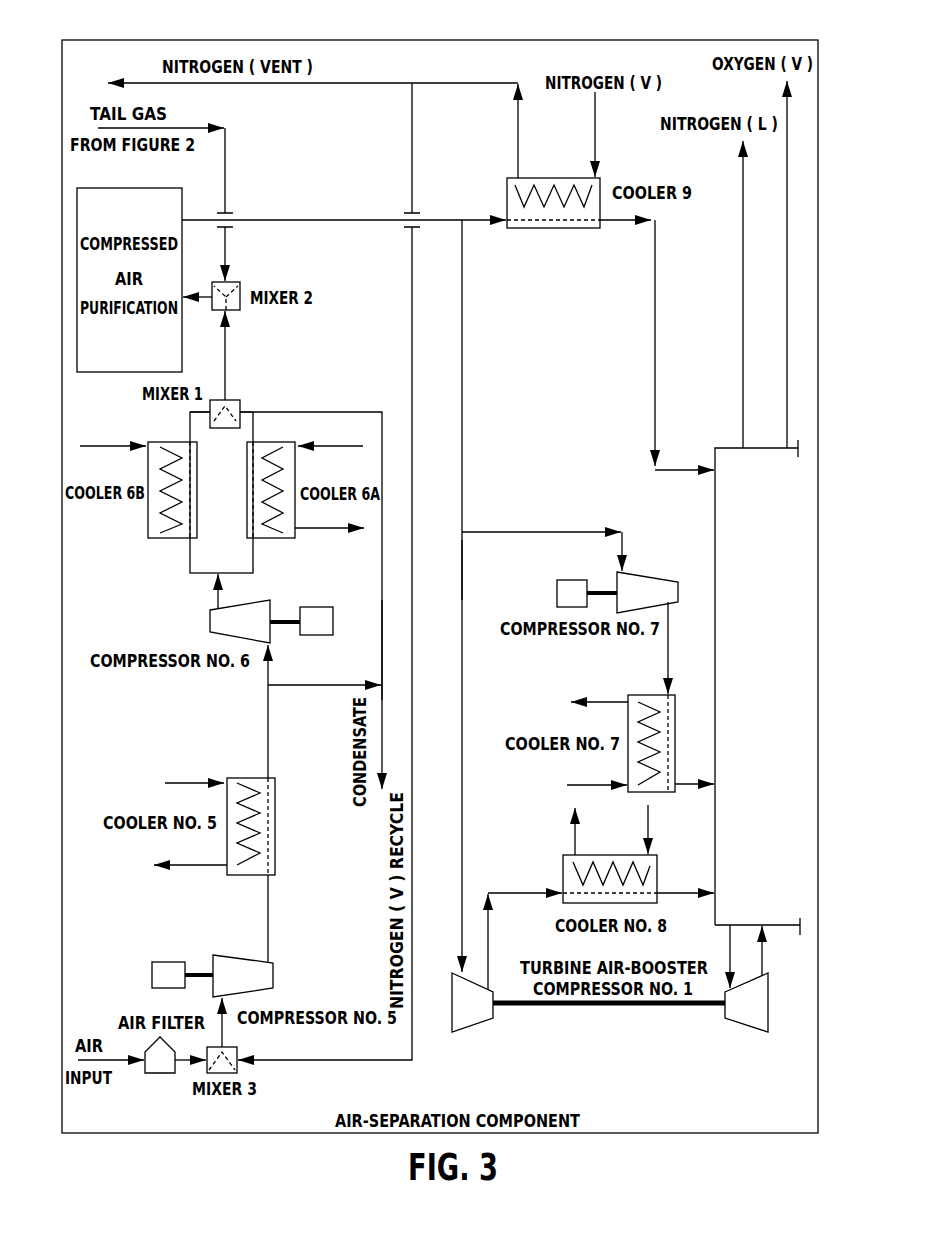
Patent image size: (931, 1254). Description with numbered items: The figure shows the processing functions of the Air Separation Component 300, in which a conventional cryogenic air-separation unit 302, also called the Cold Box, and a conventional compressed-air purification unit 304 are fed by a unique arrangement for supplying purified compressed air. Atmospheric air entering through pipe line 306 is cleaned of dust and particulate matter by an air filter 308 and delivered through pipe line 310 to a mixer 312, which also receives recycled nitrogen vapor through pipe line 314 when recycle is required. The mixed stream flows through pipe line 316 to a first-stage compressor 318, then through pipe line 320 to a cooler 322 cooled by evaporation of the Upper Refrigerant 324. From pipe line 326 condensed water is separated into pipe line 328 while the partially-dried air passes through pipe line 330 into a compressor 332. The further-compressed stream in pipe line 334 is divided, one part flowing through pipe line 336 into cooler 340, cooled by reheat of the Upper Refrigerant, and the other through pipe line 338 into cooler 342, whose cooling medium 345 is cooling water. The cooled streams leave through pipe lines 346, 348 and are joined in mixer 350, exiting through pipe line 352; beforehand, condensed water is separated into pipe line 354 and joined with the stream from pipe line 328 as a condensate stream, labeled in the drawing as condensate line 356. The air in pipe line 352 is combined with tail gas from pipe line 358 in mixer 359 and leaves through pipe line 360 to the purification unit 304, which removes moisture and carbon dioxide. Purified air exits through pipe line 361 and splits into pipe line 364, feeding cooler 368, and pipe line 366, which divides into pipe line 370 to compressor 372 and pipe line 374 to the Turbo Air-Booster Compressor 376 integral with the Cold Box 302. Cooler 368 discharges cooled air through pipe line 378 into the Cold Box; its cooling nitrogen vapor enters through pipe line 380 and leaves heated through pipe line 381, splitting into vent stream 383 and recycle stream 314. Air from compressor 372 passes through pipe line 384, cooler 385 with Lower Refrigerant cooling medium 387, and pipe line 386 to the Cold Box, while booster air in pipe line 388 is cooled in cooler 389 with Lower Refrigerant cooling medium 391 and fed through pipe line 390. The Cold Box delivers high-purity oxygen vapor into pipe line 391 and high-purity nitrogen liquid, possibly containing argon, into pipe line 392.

The Air Separation Component 300 is at (688, 53).
The cryogenic air-separation unit 302 is at (775, 474).
The compressed-air purification unit 304 is at (95, 352).
The pipe line 306 is at (128, 1065).
The air filter 308 is at (162, 1063).
The pipe line 310 is at (190, 1061).
The mixer 312 is at (240, 1068).
The pipe line 314 is at (412, 663).
The pipe line 316 is at (222, 1030).
The first-stage compressor 318 is at (265, 977).
The pipe line 320 is at (268, 905).
The cooler 322 is at (277, 822).
The Upper Refrigerant 324 is at (185, 783).
The pipe line 326 is at (270, 728).
The pipe line 328 is at (311, 685).
The pipe line 330 is at (268, 680).
The compressor 332 is at (271, 606).
The pipe line 334 is at (210, 592).
The pipe line 336 is at (190, 550).
The pipe line 338 is at (253, 565).
The cooler 340 is at (155, 468).
The cooler 342 is at (288, 470).
The cooling medium 345 is at (328, 446).
The pipe line 346 is at (190, 418).
The pipe line 348 is at (253, 430).
The mixer 350 is at (220, 399).
The pipe line 352 is at (226, 361).
The pipe line 354 is at (328, 412).
The condensate line 356 is at (382, 720).
The pipe line 358 is at (226, 160).
The mixer 359 is at (240, 284).
The pipe line 360 is at (208, 297).
The pipe line 361 is at (321, 219).
The pipe line 364 is at (470, 219).
The pipe line 366 is at (462, 400).
The cooler 368 is at (577, 218).
The pipe line 370 is at (505, 532).
The compressor 372 is at (652, 573).
The pipe line 374 is at (462, 557).
The Turbo Air-Booster Compressor 376 is at (478, 1031).
The pipe line 378 is at (655, 360).
The pipe line 380 is at (593, 150).
The pipe line 381 is at (518, 139).
The pipe line 383 is at (369, 84).
The pipe line 384 is at (668, 650).
The cooler 385 is at (628, 720).
The pipe line 386 is at (677, 790).
The cooling medium 387 is at (567, 785).
The pipe line 388 is at (489, 945).
The cooler 389 is at (563, 872).
The pipe line 390 is at (677, 895).
The pipe line 391 is at (787, 210).
The pipe line 392 is at (743, 254).